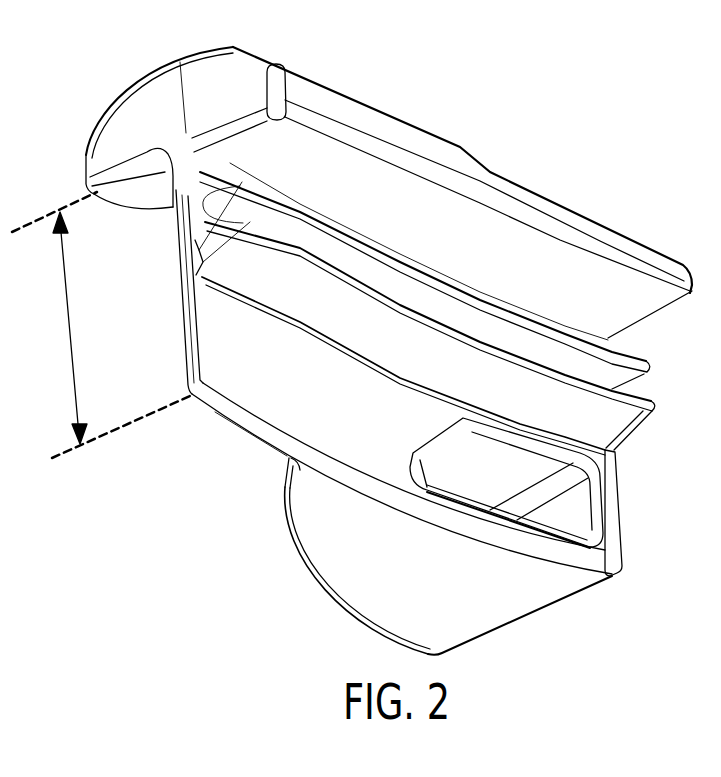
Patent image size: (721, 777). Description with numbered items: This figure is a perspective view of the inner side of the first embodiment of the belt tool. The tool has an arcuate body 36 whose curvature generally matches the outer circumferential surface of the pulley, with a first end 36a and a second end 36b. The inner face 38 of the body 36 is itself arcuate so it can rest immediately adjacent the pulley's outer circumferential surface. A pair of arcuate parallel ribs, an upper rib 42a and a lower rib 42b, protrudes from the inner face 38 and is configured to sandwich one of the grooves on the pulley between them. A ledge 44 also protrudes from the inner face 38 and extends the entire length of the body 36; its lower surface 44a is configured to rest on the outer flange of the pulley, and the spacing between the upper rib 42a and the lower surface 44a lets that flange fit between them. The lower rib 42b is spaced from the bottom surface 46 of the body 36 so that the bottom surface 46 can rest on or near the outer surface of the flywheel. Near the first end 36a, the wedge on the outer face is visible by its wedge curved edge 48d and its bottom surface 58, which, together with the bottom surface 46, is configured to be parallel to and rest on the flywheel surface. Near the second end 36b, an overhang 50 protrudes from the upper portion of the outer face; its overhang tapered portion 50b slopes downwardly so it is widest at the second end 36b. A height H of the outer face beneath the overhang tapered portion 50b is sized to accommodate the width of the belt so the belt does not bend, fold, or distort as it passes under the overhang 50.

The overhang 50 is at (140, 68).
The overhang tapered portion 50b is at (120, 209).
The ledge 44 is at (346, 104).
The lower surface of the ledge 44a is at (373, 213).
The upper rib 42a is at (632, 368).
The lower rib 42b is at (632, 410).
The inner face 38 is at (353, 417).
The arcuate body 36 is at (263, 400).
The second end 36b is at (184, 331).
The first end 36a is at (622, 492).
The bottom surface of the body 46 is at (287, 461).
The bottom surface of the wedge 58 is at (420, 569).
The wedge curved edge 48d is at (322, 594).
The height of the outer face H is at (62, 328).